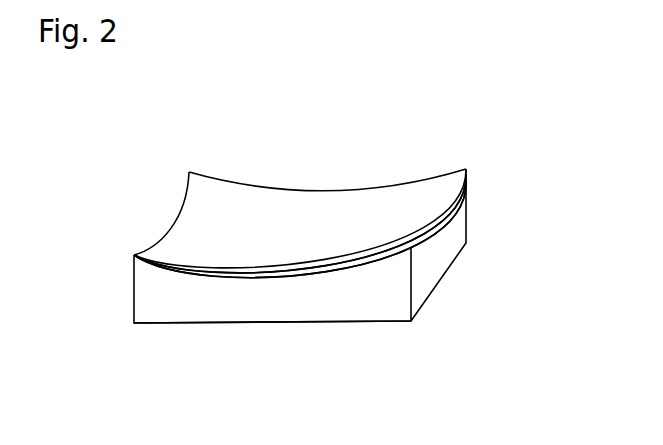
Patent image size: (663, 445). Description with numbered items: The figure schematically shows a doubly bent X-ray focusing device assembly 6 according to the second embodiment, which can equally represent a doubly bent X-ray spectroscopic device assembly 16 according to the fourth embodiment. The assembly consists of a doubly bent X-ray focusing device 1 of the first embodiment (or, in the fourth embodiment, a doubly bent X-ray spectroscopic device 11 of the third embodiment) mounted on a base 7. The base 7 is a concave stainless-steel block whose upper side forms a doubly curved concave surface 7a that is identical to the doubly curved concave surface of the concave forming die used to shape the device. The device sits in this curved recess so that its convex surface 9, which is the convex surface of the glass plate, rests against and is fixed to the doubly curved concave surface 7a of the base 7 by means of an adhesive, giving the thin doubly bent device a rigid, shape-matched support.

The doubly bent X-ray focusing device assembly 6 is at (347, 232).
The doubly bent X-ray spectroscopic device assembly 16 is at (347, 232).
The doubly bent X-ray focusing device 1 is at (347, 246).
The doubly bent X-ray spectroscopic device 11 is at (468, 170).
The base 7 is at (283, 310).
The doubly curved concave surface 7a is at (195, 282).
The convex surface 9 is at (375, 272).